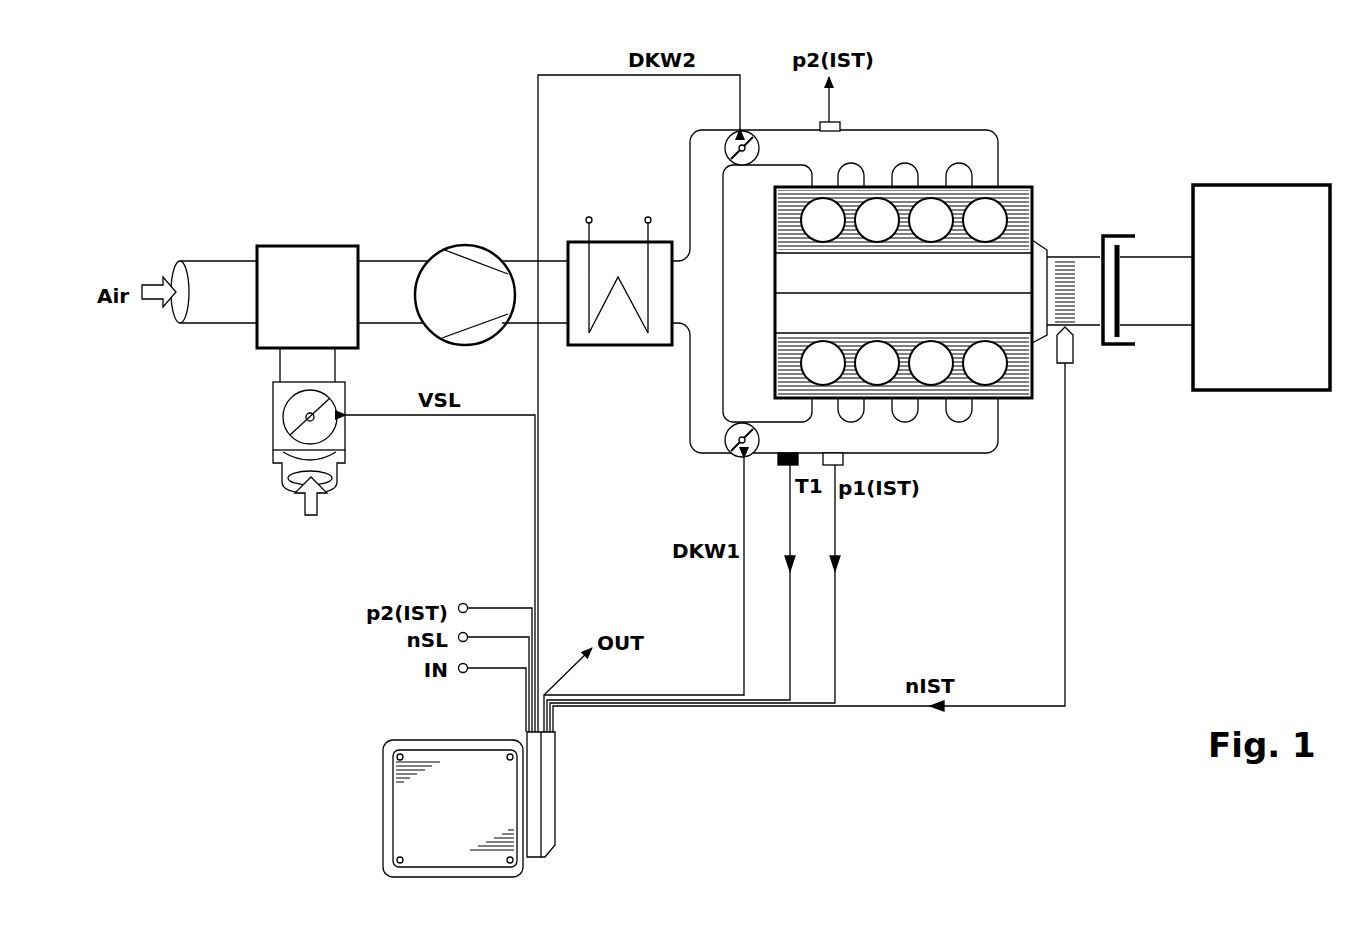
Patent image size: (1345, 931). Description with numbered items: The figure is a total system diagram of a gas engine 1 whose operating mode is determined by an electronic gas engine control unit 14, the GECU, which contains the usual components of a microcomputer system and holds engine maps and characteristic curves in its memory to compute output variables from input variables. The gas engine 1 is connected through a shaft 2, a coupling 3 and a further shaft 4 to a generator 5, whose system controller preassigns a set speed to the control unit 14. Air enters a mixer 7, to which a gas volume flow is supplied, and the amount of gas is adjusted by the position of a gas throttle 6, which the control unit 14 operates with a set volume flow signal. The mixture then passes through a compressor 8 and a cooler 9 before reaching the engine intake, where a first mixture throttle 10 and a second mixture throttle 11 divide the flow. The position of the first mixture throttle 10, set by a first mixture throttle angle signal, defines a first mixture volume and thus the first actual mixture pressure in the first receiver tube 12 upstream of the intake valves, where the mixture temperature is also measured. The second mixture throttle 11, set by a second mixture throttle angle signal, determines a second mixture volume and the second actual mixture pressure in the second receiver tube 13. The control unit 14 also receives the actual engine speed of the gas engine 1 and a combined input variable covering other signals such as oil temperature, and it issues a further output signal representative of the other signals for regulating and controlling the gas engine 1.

The gas engine 1 is at (1028, 186).
The shaft 2 is at (1081, 262).
The coupling 3 is at (1122, 218).
The shaft 4 is at (1177, 312).
The generator 5 is at (1270, 301).
The gas throttle 6 is at (262, 430).
The mixer 7 is at (316, 309).
The compressor 8 is at (473, 253).
The cooler 9 is at (633, 333).
The first mixture throttle 10 is at (710, 464).
The second mixture throttle 11 is at (690, 121).
The first receiver tube 12 is at (958, 433).
The second receiver tube 13 is at (963, 143).
The electronic engine control unit (GECU) 14 is at (471, 846).